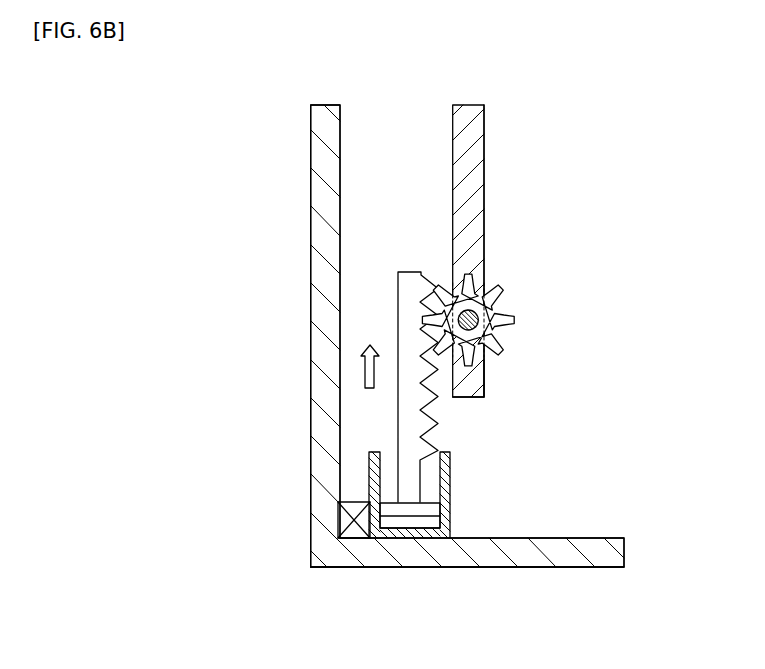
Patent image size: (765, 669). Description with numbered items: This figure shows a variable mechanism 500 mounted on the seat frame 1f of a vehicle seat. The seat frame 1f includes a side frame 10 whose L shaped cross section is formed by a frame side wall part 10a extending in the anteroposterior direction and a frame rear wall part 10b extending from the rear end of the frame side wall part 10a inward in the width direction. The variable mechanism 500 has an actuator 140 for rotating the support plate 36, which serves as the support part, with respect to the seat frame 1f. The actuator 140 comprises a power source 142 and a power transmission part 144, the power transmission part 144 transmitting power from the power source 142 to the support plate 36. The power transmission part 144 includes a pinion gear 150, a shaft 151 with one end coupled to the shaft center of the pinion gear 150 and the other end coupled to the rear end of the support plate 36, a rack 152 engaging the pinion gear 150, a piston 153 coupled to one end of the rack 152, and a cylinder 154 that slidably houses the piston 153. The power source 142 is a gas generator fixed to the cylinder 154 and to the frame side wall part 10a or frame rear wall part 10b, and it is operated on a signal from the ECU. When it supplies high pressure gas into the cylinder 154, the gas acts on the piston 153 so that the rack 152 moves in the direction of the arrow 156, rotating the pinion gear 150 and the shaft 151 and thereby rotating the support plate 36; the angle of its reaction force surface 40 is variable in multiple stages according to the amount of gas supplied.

The seat frame 1f is at (593, 567).
The side frame 10 is at (422, 353).
The frame side wall part 10a is at (324, 159).
The frame rear wall part 10b is at (523, 550).
The support plate 36 is at (486, 150).
The reaction force surface 40 is at (485, 192).
The actuator 140 is at (388, 253).
The power source 142 is at (353, 533).
The power transmission part 144 is at (533, 406).
The pinion gear 150 is at (506, 327).
The shaft 151 is at (543, 317).
The rack 152 is at (484, 383).
The piston 153 is at (450, 470).
The cylinder 154 is at (430, 512).
The arrow 156 is at (364, 380).
The variable mechanism 500 is at (515, 351).